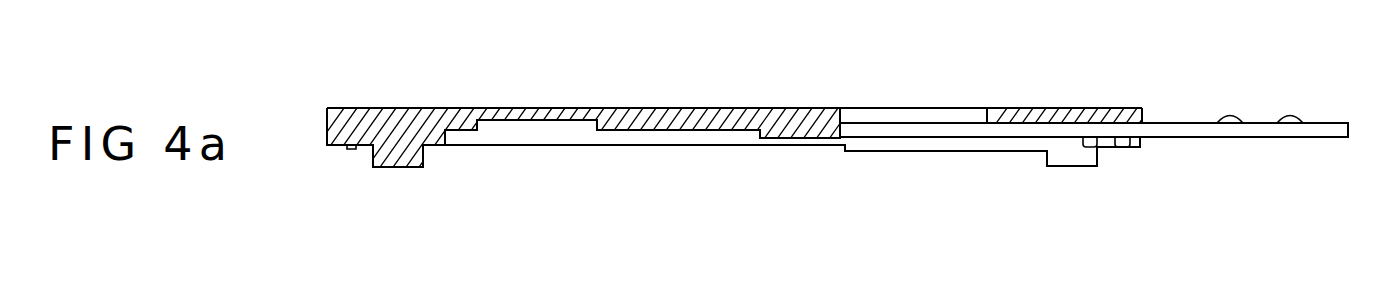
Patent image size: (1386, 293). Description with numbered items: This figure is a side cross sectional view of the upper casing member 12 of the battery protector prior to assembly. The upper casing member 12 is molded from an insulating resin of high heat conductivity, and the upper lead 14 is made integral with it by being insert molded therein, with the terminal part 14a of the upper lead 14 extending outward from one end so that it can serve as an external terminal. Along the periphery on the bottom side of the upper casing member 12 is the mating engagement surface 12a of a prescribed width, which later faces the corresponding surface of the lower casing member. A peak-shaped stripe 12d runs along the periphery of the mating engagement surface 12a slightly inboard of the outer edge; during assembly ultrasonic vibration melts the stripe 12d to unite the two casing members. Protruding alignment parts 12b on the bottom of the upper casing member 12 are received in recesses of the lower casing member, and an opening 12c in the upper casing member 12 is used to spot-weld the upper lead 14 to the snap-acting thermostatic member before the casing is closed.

The upper casing member 12 is at (740, 128).
The mating engagement surface 12a is at (433, 147).
The protruding alignment parts 12b is at (395, 168).
The opening 12c is at (968, 117).
The peak-shaped stripe 12d is at (350, 150).
The upper lead 14 is at (888, 122).
The terminal part 14a is at (1257, 124).